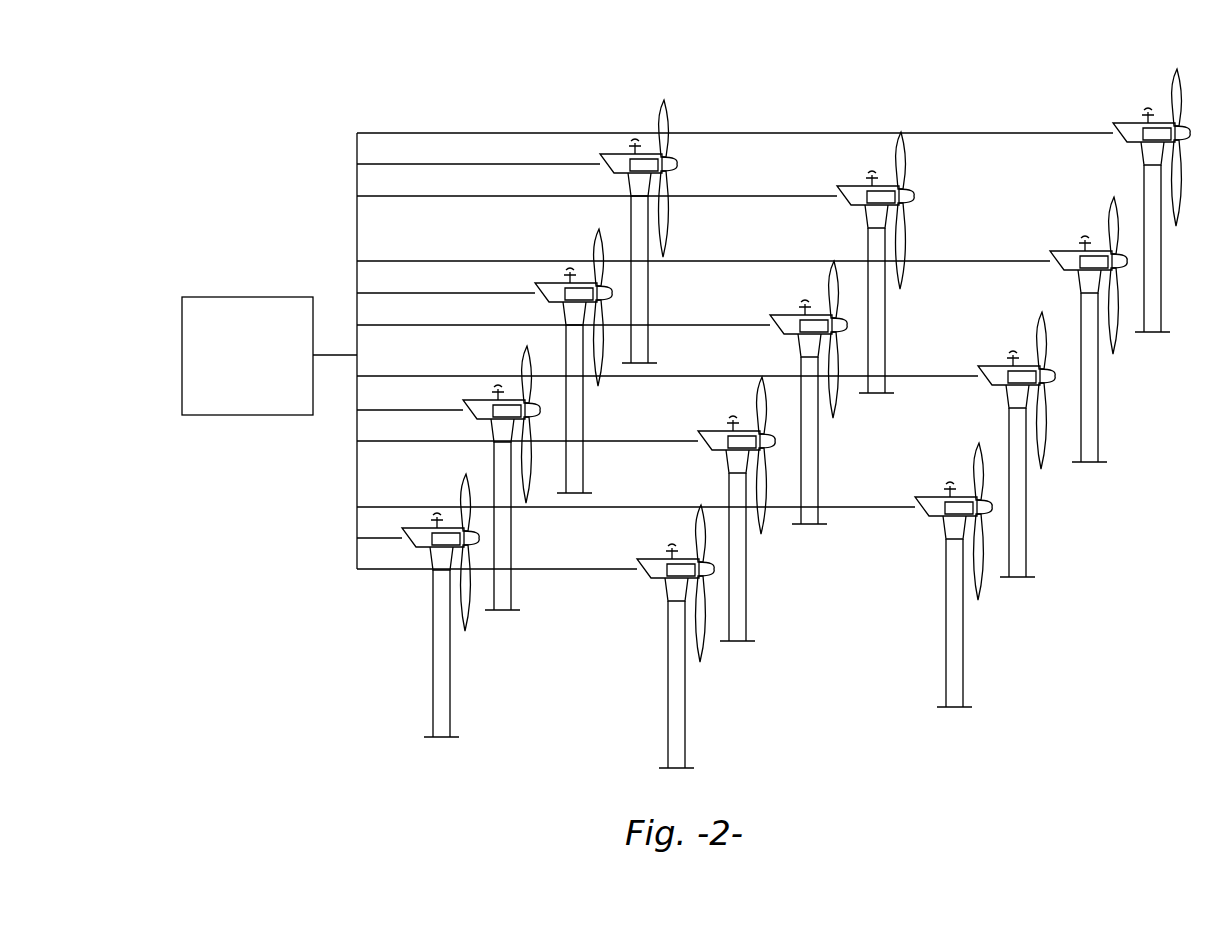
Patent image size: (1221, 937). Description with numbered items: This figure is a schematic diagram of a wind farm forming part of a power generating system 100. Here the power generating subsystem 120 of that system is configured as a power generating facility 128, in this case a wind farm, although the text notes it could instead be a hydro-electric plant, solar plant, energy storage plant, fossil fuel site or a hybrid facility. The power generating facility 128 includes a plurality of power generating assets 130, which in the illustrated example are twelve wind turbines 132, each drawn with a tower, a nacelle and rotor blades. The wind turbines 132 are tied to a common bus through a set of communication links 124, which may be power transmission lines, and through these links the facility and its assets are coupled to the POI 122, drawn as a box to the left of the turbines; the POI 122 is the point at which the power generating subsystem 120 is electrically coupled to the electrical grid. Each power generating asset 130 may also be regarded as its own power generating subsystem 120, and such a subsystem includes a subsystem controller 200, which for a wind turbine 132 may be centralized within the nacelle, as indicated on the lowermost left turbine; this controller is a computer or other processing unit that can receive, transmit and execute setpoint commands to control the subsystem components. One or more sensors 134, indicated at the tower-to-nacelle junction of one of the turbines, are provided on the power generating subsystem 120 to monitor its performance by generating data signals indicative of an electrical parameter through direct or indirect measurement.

The power generating system 100 is at (228, 93).
The power generating subsystem 120 is at (410, 85).
The POI 122 is at (233, 406).
The communication link 124 is at (488, 260).
The power generating facility 128 is at (283, 212).
The power generating asset 130 is at (512, 557).
The wind turbine 132 is at (745, 418).
The sensor 134 is at (668, 598).
The subsystem controller 200 is at (447, 523).